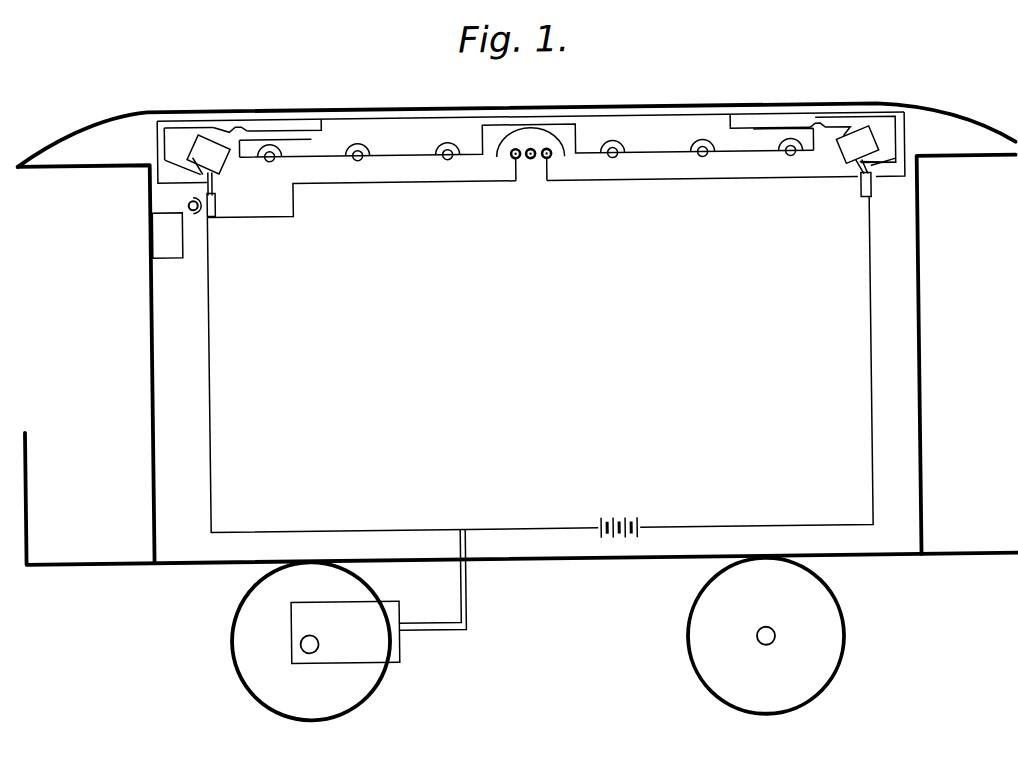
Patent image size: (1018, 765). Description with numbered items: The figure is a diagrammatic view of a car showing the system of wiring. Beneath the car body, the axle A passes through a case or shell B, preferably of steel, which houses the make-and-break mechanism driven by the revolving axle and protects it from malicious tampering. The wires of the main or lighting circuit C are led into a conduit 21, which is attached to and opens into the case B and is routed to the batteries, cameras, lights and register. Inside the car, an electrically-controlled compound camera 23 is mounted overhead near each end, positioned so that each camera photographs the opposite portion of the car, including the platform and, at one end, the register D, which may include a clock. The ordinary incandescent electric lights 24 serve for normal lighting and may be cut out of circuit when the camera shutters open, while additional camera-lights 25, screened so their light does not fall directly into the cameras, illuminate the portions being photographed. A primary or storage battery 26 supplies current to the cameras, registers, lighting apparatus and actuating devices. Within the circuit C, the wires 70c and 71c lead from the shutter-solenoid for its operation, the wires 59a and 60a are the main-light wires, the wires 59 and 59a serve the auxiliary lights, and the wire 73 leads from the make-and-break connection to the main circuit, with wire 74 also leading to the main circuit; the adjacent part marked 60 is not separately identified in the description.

The conduit 21 is at (466, 590).
The compound camera 23 is at (533, 150).
The incandescent electric light 24 is at (273, 150).
The camera-light 25 is at (533, 160).
The battery 26 is at (614, 515).
The auxiliary-light wire 59 is at (202, 179).
The main-light wire 59a is at (167, 143).
The contact 60 is at (221, 127).
The main-light wire 60a is at (168, 159).
The shutter-solenoid wire 70c is at (255, 128).
The shutter-solenoid wire 71c is at (314, 137).
The wire 73 is at (217, 206).
The wire 74 is at (215, 183).
The axle A is at (297, 644).
The case or shell B is at (345, 632).
The main or lighting circuit C is at (211, 430).
The register D is at (167, 235).